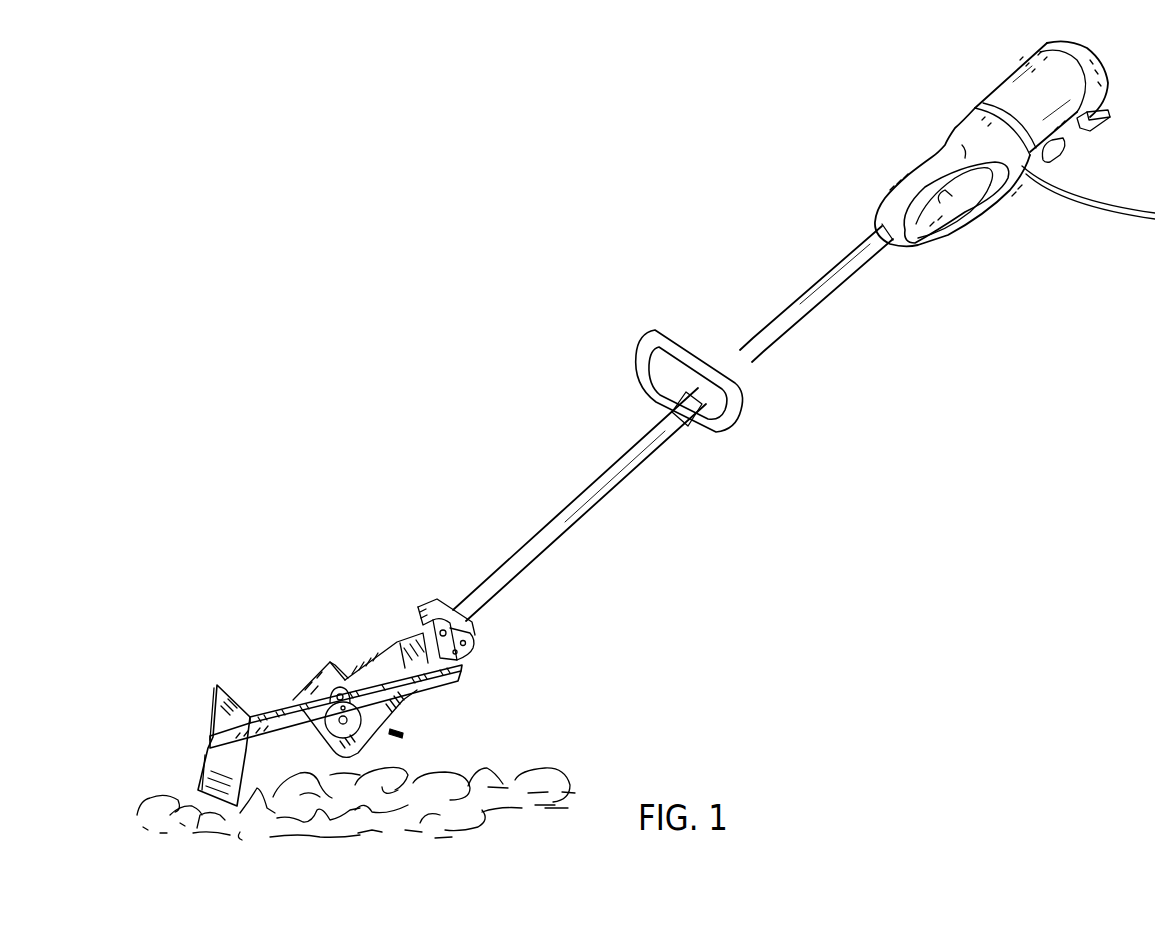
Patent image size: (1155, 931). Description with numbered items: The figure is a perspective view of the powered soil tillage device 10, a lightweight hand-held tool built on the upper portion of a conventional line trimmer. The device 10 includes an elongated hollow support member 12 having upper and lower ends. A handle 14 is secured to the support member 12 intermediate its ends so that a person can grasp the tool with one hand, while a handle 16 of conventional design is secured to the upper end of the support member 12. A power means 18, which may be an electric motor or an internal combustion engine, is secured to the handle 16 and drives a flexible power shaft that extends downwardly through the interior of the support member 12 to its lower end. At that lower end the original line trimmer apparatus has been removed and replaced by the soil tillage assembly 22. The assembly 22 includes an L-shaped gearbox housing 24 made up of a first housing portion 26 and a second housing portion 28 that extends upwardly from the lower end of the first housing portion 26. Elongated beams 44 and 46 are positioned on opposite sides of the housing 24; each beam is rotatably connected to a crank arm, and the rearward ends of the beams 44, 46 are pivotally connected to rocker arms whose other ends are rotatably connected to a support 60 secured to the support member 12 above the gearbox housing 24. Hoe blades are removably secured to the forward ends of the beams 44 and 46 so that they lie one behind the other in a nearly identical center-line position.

The powered soil tillage device 10 is at (545, 435).
The elongated hollow support member 12 is at (776, 363).
The handle 14 is at (677, 337).
The handle 16 is at (983, 220).
The power means 18 is at (1017, 92).
The soil tillage assembly 22 is at (361, 640).
The gearbox housing 24 is at (402, 733).
The first housing portion 26 is at (413, 703).
The second housing portion 28 is at (310, 687).
The elongated beam 44 is at (477, 627).
The elongated beam 46 is at (270, 702).
The support 60 is at (433, 600).